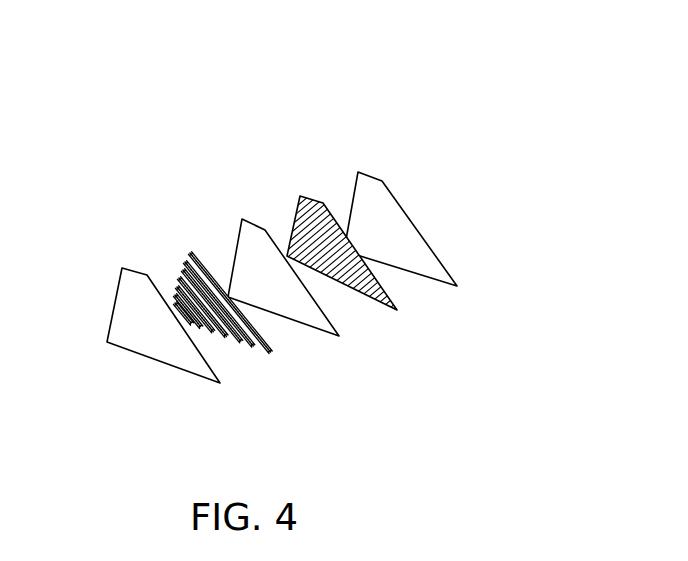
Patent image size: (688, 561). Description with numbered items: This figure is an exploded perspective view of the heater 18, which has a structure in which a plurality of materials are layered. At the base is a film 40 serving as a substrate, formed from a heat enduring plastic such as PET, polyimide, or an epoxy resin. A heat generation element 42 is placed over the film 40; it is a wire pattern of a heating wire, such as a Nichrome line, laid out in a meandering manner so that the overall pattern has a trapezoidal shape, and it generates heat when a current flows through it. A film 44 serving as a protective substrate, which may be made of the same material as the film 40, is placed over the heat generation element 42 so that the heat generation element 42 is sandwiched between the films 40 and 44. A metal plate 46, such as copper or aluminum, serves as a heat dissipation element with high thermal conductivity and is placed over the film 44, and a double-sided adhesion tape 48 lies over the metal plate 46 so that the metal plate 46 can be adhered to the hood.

The heater 18 is at (226, 95).
The film 40 is at (138, 267).
The heat generation element 42 is at (199, 253).
The film 44 is at (243, 219).
The metal plate 46 is at (311, 197).
The double-sided adhesion tape 48 is at (381, 178).